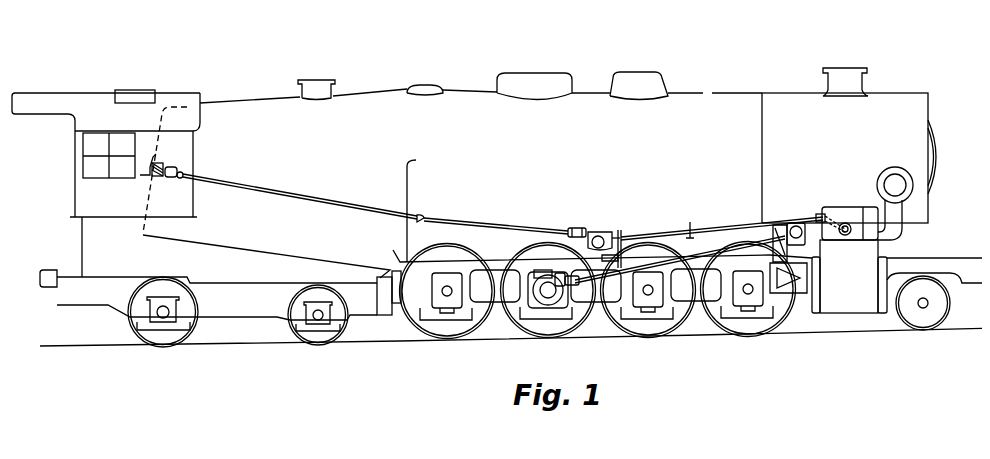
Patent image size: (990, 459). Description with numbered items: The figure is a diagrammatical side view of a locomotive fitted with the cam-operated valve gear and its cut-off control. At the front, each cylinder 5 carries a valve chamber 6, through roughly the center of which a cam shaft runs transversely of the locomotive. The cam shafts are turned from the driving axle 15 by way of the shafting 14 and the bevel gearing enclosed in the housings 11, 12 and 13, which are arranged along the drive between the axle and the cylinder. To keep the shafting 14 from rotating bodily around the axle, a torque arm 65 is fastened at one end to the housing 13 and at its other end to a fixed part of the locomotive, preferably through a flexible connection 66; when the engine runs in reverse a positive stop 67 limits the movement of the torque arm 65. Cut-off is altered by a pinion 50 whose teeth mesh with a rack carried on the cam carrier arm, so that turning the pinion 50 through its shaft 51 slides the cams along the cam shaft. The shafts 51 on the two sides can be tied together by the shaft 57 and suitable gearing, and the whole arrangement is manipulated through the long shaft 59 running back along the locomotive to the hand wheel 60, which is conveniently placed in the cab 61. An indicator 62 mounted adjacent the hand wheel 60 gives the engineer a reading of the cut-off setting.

The cylinder 5 is at (849, 276).
The valve chamber 6 is at (855, 209).
The housing 11 is at (795, 224).
The housing 12 is at (783, 218).
The housing 13 is at (540, 273).
The shafting 14 is at (670, 239).
The driving axle 15 is at (557, 294).
The pinion 50 is at (850, 208).
The shaft 51 is at (736, 228).
The shaft 57 is at (606, 234).
The shaft 59 is at (297, 194).
The hand wheel 60 is at (158, 158).
The cab 61 is at (106, 183).
The indicator 62 is at (160, 178).
The torque arm 65 is at (572, 274).
The flexible connection 66 is at (640, 259).
The positive stop 67 is at (580, 229).